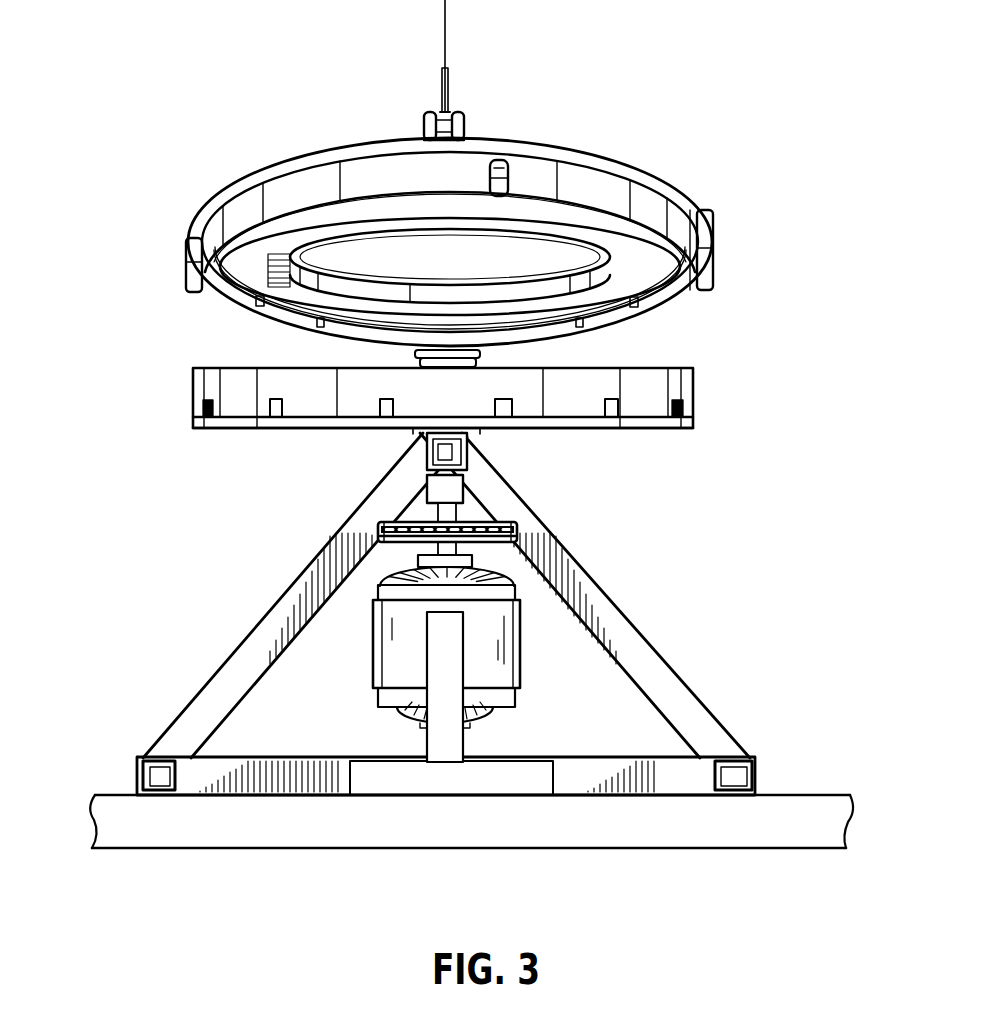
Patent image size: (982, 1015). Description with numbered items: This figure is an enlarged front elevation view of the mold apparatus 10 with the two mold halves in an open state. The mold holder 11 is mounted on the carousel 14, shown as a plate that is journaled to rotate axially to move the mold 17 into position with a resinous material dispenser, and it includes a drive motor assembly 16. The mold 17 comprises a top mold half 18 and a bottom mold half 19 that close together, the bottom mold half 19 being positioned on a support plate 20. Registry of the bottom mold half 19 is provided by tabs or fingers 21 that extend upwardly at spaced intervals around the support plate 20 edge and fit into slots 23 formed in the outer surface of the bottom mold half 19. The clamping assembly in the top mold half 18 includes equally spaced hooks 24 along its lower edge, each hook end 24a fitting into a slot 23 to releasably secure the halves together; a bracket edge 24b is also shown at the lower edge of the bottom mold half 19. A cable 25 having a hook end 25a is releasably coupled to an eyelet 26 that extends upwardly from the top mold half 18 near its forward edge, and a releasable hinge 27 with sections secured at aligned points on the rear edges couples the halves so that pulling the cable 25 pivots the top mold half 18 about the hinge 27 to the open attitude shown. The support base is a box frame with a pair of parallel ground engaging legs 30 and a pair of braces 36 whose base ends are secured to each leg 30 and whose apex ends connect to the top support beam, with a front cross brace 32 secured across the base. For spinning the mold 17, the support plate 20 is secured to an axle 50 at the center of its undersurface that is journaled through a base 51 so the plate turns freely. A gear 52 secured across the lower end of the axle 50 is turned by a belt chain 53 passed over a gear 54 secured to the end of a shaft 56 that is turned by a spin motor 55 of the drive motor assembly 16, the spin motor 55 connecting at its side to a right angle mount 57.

The mold apparatus 10 is at (757, 409).
The mold holder 11 is at (234, 578).
The carousel 14 is at (157, 832).
The drive motor assembly 16 is at (532, 645).
The mold 17 is at (220, 350).
The top mold half 18 is at (704, 210).
The bottom mold half 19 is at (688, 381).
The support plate 20 is at (661, 422).
The tabs or fingers 21 is at (616, 418).
The slots 23 is at (614, 405).
The hooks 24 is at (504, 174).
The hook end 24a is at (506, 197).
The bracket edge 24b is at (697, 418).
The cable 25 is at (453, 65).
The hook end 25a is at (445, 108).
The eyelet 26 is at (425, 130).
The releasable hinge 27 is at (440, 350).
The ground engaging legs 30 is at (150, 775).
The front cross brace 32 is at (613, 790).
The braces 36 is at (245, 652).
The axle 50 is at (426, 455).
The base 51 is at (414, 488).
The gear 52 is at (505, 497).
The belt chain 53 is at (520, 528).
The gear 54 is at (380, 530).
The spin motor 55 is at (422, 657).
The shaft 56 is at (490, 558).
The right angle mount 57 is at (452, 744).